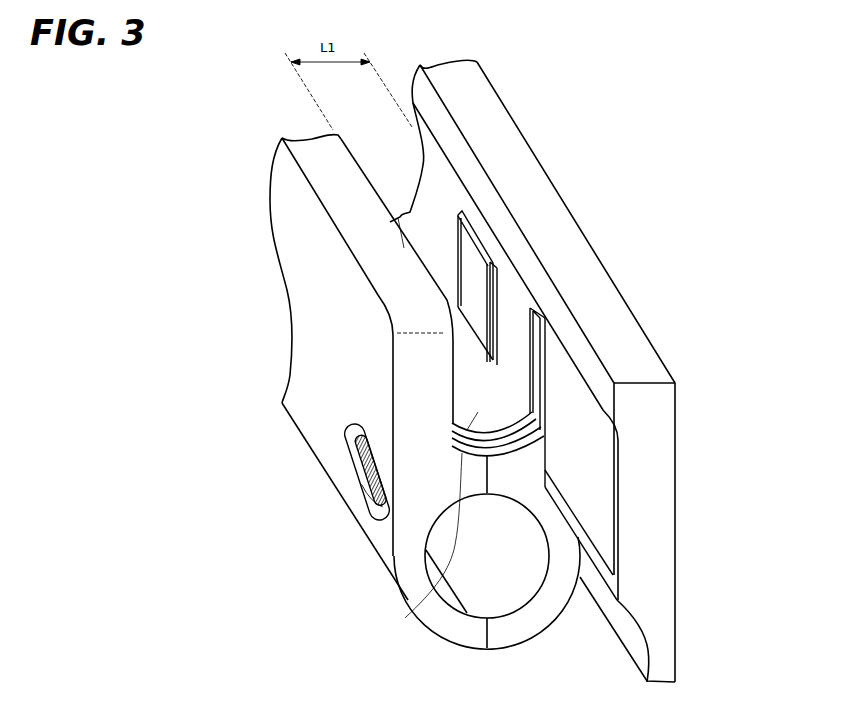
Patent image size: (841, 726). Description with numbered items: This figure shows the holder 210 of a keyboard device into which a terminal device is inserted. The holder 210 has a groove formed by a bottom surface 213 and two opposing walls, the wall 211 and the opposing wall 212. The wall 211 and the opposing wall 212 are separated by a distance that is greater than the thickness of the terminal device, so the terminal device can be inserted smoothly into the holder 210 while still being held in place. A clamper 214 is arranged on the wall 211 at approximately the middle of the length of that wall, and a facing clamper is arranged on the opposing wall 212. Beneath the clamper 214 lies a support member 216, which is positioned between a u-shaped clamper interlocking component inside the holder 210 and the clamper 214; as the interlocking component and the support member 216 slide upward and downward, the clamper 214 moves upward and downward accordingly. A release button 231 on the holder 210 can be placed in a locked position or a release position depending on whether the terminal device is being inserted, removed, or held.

The holder 210 is at (678, 650).
The wall 211 is at (430, 157).
The opposing wall 212 is at (397, 213).
The bottom surface 213 is at (455, 592).
The clamper 214 is at (473, 260).
The support member 216 is at (478, 322).
The release button 231 is at (378, 507).